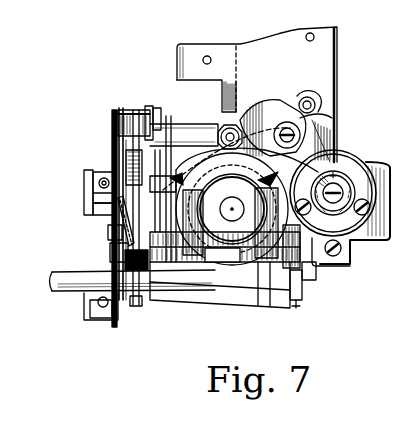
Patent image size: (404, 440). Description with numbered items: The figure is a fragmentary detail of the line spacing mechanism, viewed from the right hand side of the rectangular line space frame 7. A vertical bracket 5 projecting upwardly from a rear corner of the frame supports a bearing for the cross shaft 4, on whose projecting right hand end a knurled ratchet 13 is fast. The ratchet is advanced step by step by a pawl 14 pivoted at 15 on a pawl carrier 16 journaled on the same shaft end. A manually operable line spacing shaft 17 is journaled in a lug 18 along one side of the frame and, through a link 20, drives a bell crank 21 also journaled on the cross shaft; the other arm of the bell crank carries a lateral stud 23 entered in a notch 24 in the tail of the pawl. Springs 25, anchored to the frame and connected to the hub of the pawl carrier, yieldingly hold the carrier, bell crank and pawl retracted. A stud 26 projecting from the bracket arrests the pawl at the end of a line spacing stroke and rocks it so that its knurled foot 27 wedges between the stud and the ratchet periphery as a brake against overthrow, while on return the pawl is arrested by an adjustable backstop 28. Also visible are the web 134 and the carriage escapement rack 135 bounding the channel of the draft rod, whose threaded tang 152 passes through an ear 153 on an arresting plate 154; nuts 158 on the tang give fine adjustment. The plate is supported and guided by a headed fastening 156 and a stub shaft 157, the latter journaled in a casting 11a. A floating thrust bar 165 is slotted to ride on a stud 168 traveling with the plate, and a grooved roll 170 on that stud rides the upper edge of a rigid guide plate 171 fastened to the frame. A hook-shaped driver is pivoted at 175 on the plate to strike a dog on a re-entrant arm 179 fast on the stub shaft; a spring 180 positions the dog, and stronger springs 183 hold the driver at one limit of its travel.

The shaft 4 is at (229, 206).
The vertical bracket 5 is at (282, 31).
The line space frame 7 is at (88, 320).
The casting 11a is at (168, 226).
The knurled ratchet 13 is at (200, 165).
The pawl 14 is at (276, 122).
The pivot 15 is at (336, 127).
The pawl carrier 16 is at (285, 104).
The line spacing shaft 17 is at (80, 289).
The lug 18 is at (282, 304).
The link 20 is at (302, 260).
The bell crank 21 is at (318, 95).
The lateral stud 23 is at (307, 97).
The notch 24 is at (318, 113).
The springs 25 is at (184, 266).
The stud 26 is at (222, 128).
The knurled foot 27 is at (264, 110).
The adjustable backstop 28 is at (343, 142).
The web 134 is at (100, 214).
The carriage escapement rack 135 is at (84, 176).
The threaded tang 152 is at (104, 177).
The ear 153 is at (100, 178).
The arresting plate 154 is at (112, 213).
The headed fastening 156 is at (110, 232).
The stub shaft 157 is at (250, 258).
The nuts 158 is at (108, 176).
The thrust bar 165 is at (156, 108).
The stud 168 is at (160, 124).
The grooved roll 170 is at (152, 114).
The guide plate 171 is at (167, 189).
The pivot 175 is at (113, 318).
The re-entrant arm 179 is at (138, 306).
The spring 180 is at (122, 260).
The springs 183 is at (140, 130).